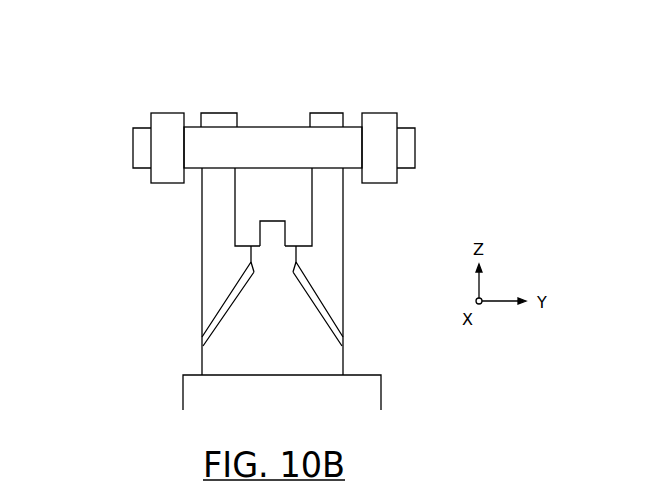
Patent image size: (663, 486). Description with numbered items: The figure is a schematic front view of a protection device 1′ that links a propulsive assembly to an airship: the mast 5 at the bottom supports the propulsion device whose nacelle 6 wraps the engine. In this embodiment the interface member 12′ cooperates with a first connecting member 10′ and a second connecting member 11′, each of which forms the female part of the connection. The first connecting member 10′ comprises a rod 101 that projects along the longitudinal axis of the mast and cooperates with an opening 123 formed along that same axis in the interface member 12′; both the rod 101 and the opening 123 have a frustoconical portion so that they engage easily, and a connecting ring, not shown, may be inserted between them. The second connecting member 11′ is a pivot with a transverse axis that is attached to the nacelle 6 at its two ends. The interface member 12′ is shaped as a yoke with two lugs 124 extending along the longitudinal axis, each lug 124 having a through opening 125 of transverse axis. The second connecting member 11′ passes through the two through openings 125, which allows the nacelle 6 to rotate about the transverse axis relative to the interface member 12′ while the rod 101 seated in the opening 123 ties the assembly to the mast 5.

The applicator assembly 1′ is at (444, 99).
The mast 5 is at (284, 411).
The nacelle 6 is at (173, 112).
The first connecting member 10′ is at (202, 353).
The second connecting member 11′ is at (132, 143).
The interface member 12′ is at (202, 248).
The rod 101 is at (289, 328).
The opening 123 is at (215, 310).
The lugs 124 is at (217, 112).
The through opening 125 is at (323, 145).